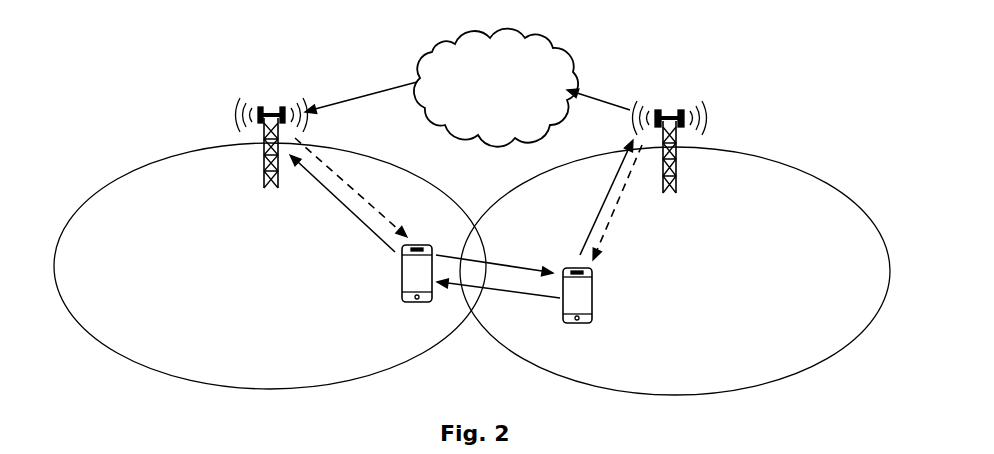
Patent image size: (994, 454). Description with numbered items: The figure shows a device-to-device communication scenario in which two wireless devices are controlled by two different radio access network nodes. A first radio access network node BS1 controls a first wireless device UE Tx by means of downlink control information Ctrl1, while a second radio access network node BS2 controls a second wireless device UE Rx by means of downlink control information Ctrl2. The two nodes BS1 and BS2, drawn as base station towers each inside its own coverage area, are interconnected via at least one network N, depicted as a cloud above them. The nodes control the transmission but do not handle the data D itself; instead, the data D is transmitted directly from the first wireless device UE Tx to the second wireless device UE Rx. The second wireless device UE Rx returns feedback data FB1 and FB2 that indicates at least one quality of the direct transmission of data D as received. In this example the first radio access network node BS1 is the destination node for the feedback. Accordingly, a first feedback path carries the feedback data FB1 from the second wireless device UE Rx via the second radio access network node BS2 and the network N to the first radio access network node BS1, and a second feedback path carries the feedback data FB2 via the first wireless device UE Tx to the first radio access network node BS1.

The network N is at (496, 88).
The first radio access network node BS1 is at (272, 160).
The second radio access network node BS2 is at (670, 164).
The first wireless device UE Tx is at (406, 291).
The second wireless device UE Rx is at (572, 315).
The feedback data FB1 is at (466, 161).
The feedback data FB2 is at (425, 239).
The downlink control information Ctrl1 is at (373, 187).
The downlink control information Ctrl2 is at (630, 209).
The data D is at (494, 259).